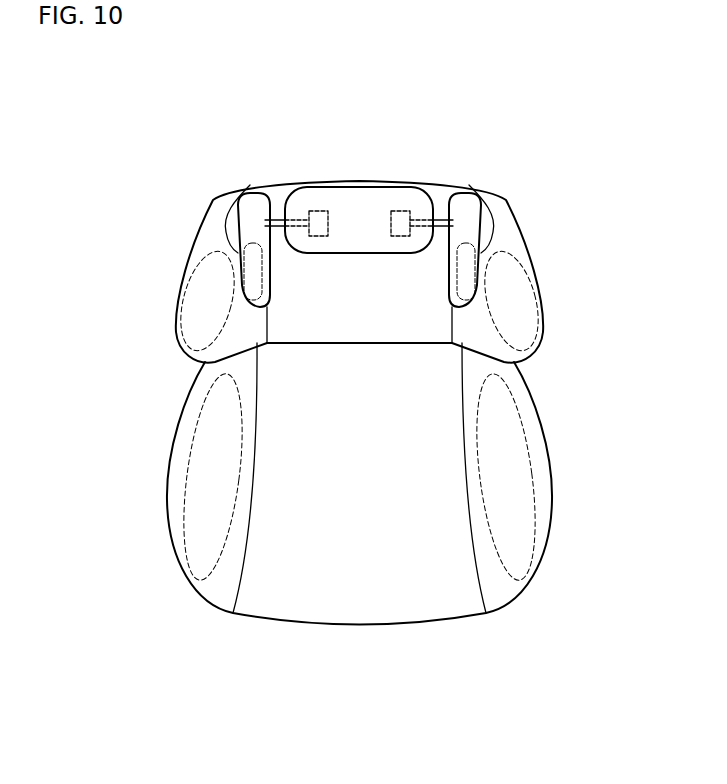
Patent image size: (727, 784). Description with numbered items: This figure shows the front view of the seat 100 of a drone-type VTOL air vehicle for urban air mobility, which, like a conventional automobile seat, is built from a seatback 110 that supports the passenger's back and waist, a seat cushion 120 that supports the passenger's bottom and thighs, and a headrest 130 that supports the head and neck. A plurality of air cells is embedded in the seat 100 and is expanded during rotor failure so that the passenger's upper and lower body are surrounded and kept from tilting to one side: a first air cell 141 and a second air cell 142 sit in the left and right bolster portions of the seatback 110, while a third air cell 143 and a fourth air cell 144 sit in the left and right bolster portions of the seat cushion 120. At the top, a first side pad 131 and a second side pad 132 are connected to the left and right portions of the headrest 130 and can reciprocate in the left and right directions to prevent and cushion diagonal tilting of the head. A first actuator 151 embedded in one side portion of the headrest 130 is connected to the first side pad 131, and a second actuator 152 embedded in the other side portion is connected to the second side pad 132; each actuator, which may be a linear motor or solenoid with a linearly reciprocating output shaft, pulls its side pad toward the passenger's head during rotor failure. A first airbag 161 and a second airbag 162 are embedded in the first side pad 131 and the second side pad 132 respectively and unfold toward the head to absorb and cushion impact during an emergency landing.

The seat 100 is at (177, 258).
The seatback 110 is at (182, 288).
The seat cushion 120 is at (183, 412).
The headrest 130 is at (362, 191).
The first side pad 131 is at (213, 200).
The second side pad 132 is at (501, 200).
The first air cell 141 is at (190, 327).
The second air cell 142 is at (527, 290).
The third air cell 143 is at (193, 467).
The fourth air cell 144 is at (525, 467).
The first actuator 151 is at (318, 211).
The second actuator 152 is at (400, 211).
The first airbag 161 is at (255, 243).
The second airbag 162 is at (467, 243).